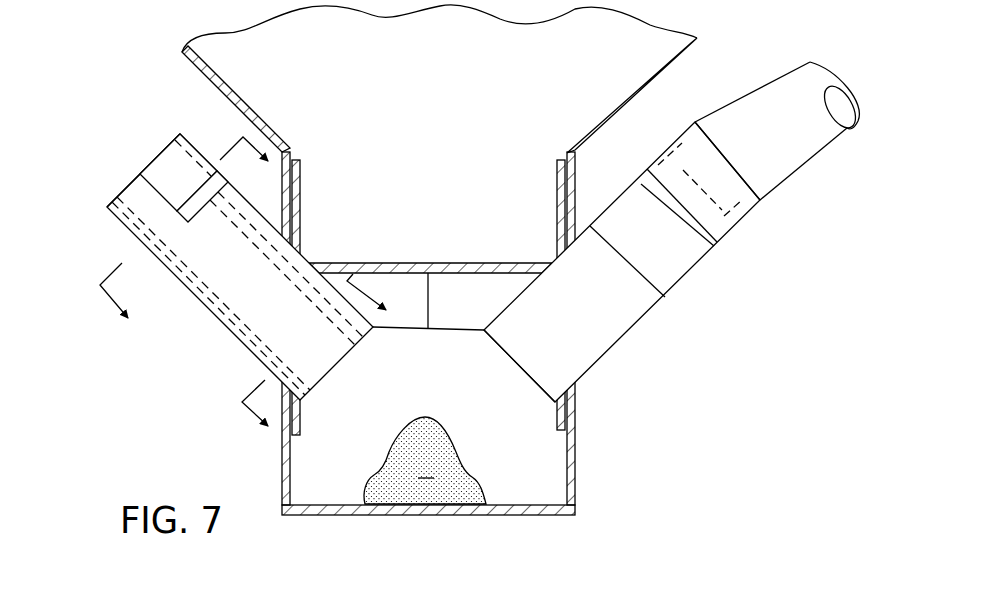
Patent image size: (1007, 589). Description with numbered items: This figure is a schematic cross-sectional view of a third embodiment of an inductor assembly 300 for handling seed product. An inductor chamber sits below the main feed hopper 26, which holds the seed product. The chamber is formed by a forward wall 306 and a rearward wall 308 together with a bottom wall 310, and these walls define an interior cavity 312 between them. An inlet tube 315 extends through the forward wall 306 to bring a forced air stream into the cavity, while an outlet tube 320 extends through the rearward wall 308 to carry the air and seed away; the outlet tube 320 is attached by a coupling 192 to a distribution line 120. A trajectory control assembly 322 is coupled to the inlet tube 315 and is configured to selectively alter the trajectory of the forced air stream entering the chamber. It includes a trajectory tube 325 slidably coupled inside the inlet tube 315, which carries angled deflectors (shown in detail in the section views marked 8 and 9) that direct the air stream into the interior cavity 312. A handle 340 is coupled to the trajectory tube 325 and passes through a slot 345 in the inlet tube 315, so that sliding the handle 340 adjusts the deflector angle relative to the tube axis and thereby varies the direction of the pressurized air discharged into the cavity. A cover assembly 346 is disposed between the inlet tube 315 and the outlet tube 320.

The main feed hopper 26 is at (673, 61).
The distribution line 120 is at (757, 84).
The coupling 192 is at (758, 216).
The inductor assembly 300 is at (703, 352).
The forward wall 306 is at (280, 466).
The rearward wall 308 is at (578, 477).
The bottom wall 310 is at (425, 516).
The interior cavity 312 is at (520, 469).
The inlet tube 315 is at (105, 210).
The outlet tube 320 is at (656, 309).
The trajectory control assembly 322 is at (206, 293).
The trajectory tube 325 is at (240, 340).
The handle 340 is at (168, 198).
The slot 345 is at (205, 203).
The cover assembly 346 is at (430, 263).
The section line 8- 8 is at (178, 217).
The section line 9- 9 is at (318, 355).